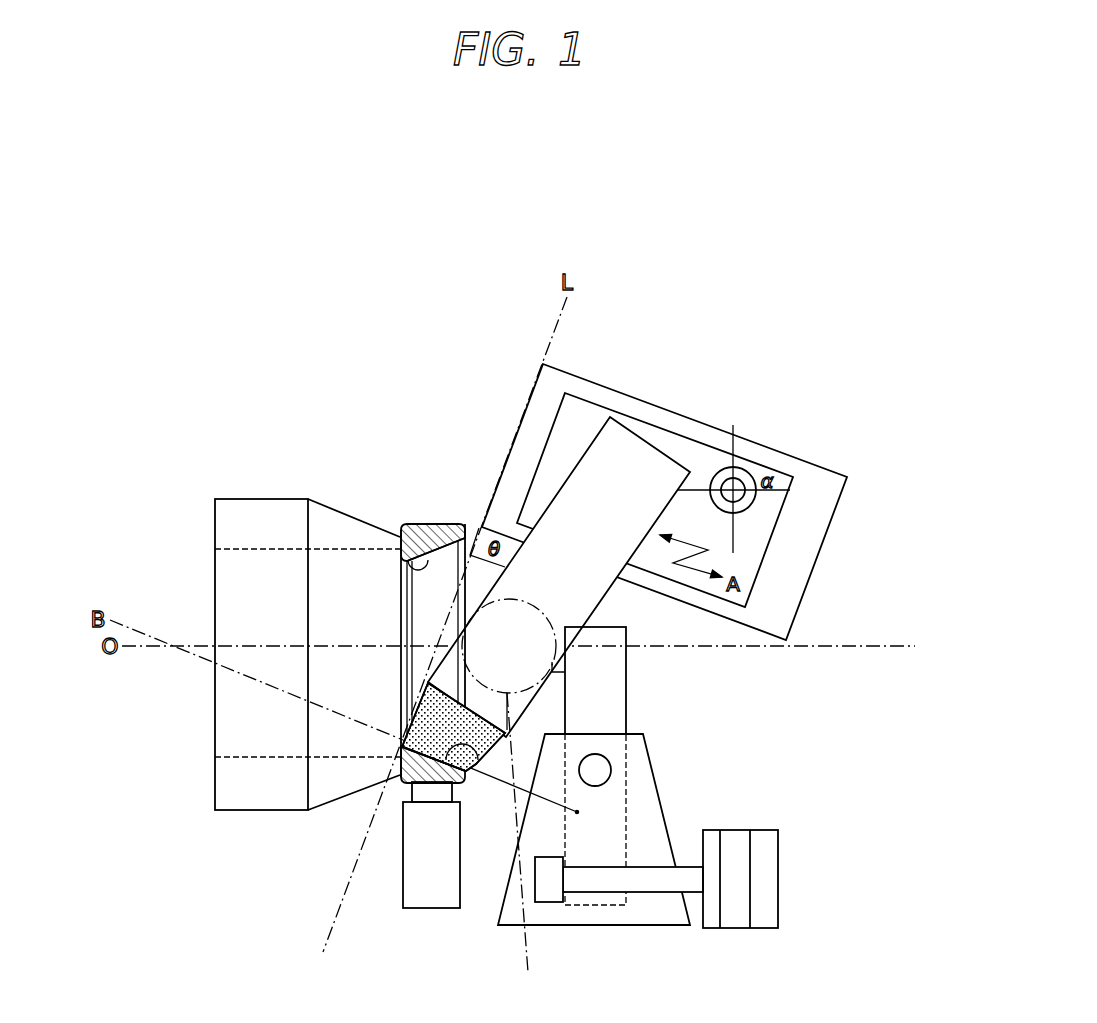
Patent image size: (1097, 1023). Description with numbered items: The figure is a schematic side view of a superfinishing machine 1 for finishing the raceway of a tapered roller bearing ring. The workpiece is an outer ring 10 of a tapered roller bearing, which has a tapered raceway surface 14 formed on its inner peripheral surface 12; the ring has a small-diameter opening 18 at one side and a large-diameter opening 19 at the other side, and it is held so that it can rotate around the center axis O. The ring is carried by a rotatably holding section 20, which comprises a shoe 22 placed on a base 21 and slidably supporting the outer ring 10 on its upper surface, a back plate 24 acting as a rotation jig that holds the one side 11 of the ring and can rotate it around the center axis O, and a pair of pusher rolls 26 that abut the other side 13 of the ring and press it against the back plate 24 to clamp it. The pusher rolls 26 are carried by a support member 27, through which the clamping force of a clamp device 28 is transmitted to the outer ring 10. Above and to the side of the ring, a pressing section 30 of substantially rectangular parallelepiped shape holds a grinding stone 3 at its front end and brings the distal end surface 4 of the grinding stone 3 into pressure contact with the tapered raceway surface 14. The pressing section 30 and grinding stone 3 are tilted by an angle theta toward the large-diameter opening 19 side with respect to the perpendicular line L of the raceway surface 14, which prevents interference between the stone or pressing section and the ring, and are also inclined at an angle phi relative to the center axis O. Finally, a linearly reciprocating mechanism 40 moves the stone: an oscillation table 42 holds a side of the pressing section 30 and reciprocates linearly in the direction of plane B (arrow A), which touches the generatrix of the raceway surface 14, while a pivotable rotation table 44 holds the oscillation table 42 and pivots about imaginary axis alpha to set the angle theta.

The superfinishing machine 1 is at (695, 310).
The grinding stone 3 is at (400, 772).
The distal end surface 4 is at (401, 776).
The outer ring 10 is at (447, 525).
The one side 11 is at (398, 547).
The inner peripheral surface 12 is at (423, 526).
The other side 13 is at (468, 540).
The tapered raceway surface 14 is at (476, 766).
The small-diameter opening 18 is at (400, 605).
The large-diameter opening 19 is at (463, 601).
The rotatably holding section 20 is at (342, 843).
The base 21 is at (432, 908).
The shoe 22 is at (431, 793).
The back plate 24 is at (257, 803).
The pusher roll 26 is at (594, 813).
The support member 27 is at (597, 917).
The clamp device 28 is at (737, 915).
The pressing section 30 is at (573, 465).
The linearly reciprocating mechanism 40 is at (827, 467).
The oscillation table 42 is at (755, 540).
The rotation table 44 is at (807, 515).